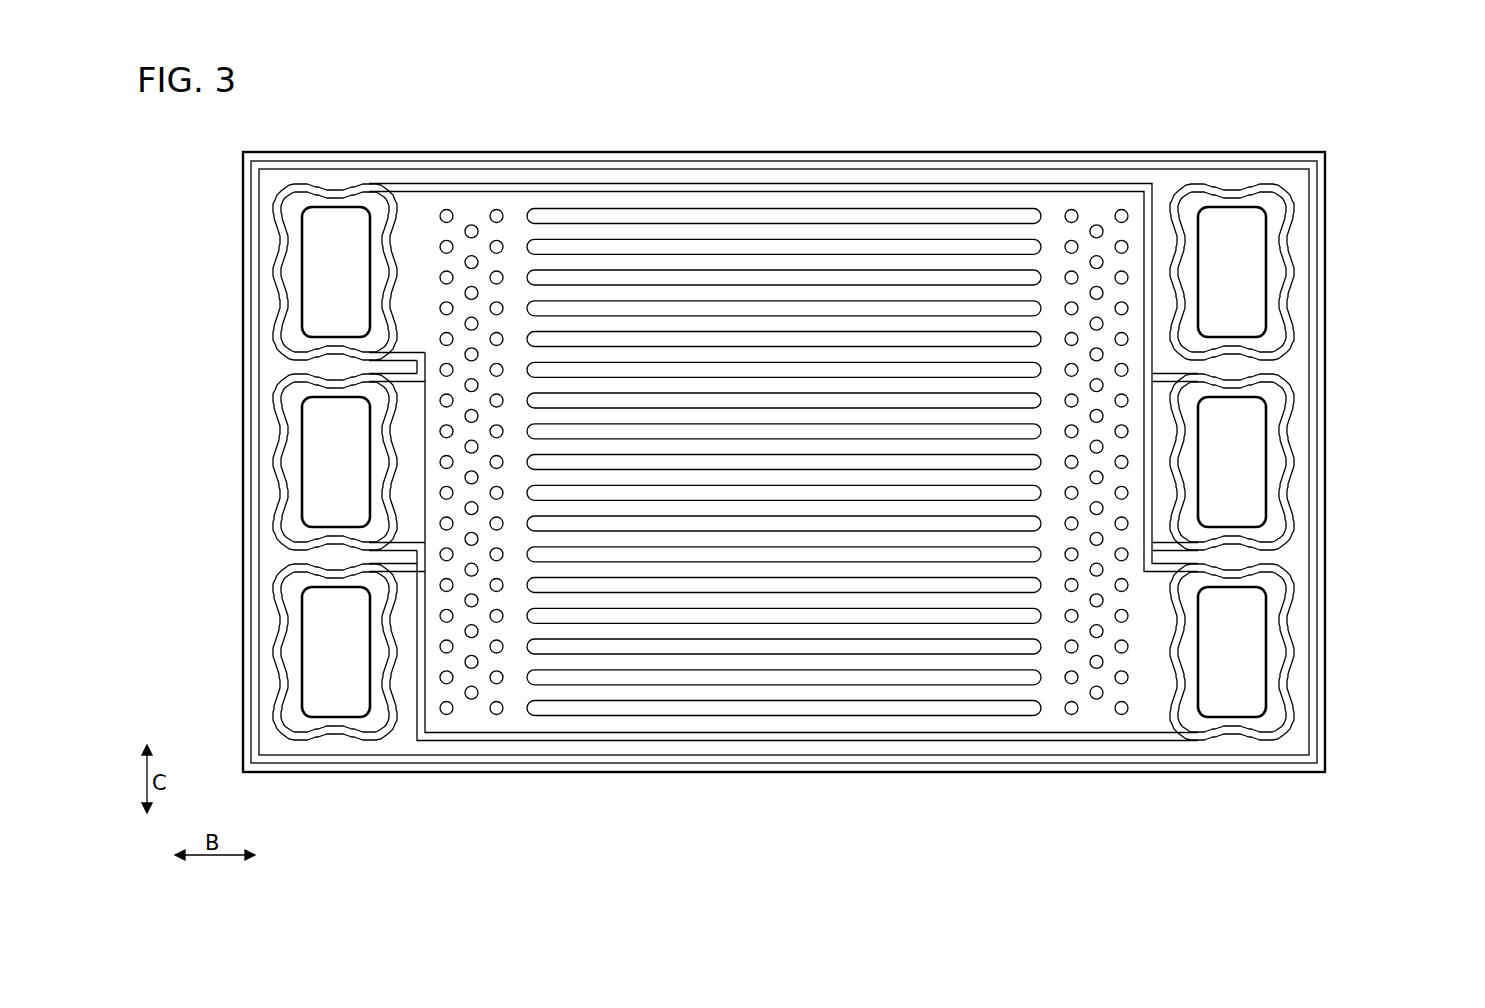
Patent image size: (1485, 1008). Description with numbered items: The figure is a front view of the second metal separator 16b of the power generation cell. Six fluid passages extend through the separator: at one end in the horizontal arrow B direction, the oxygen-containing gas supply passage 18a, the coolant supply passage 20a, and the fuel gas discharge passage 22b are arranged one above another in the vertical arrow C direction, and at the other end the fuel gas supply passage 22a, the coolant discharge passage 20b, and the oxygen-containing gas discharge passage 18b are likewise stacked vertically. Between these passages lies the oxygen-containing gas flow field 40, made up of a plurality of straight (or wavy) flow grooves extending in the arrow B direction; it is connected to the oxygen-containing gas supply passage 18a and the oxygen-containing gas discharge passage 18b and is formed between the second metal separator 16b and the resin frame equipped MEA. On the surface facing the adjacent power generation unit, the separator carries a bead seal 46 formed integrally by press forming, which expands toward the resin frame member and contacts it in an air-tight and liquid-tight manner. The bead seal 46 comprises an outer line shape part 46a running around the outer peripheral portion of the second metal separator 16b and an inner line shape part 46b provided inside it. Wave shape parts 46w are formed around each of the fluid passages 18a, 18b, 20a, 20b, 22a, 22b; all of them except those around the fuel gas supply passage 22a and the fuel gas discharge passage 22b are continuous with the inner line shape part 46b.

The second metal separator 16b is at (1290, 113).
The oxygen-containing gas flow field 40 is at (650, 228).
The bead seal 46 is at (784, 509).
The outer line shape part 46a is at (814, 757).
The inner line shape part 46b is at (848, 815).
The wave shape parts 46w is at (283, 308).
The oxygen-containing gas supply passage 18a is at (315, 262).
The oxygen-containing gas discharge passage 18b is at (1250, 672).
The coolant supply passage 20a is at (315, 445).
The coolant discharge passage 20b is at (1250, 475).
The fuel gas supply passage 22a is at (1250, 270).
The fuel gas discharge passage 22b is at (313, 652).